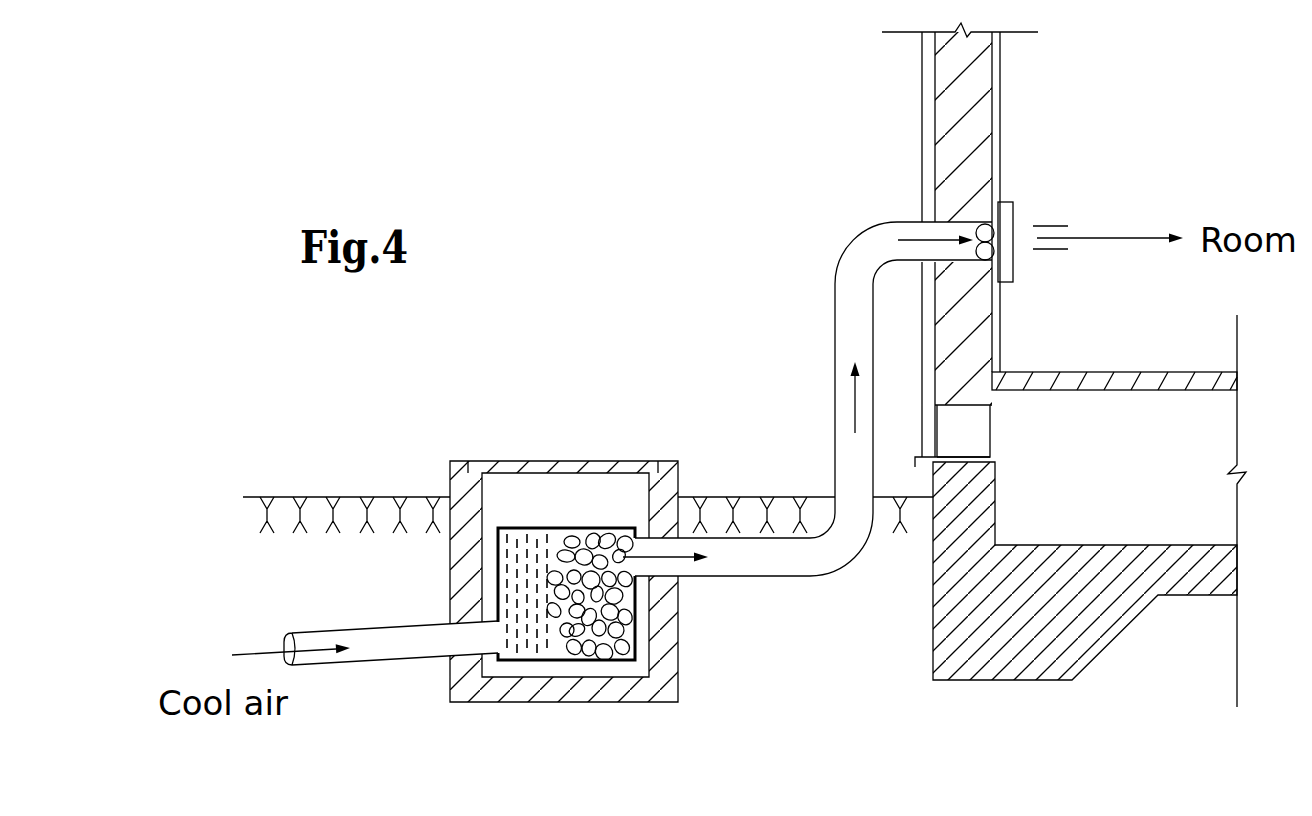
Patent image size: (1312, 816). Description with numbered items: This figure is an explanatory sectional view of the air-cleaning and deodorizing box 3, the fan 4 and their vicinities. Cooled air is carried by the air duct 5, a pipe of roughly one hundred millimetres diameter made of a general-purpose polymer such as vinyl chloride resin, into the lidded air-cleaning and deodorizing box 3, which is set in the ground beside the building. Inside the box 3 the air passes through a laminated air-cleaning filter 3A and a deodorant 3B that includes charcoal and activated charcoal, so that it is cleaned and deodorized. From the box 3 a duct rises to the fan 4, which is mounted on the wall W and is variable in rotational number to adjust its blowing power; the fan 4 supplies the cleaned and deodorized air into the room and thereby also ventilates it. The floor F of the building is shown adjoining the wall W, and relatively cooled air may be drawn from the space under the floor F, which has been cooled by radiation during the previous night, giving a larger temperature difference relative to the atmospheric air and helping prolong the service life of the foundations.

The air-cleaning and deodorizing box 3 is at (682, 478).
The laminated air-cleaning filter 3A is at (520, 653).
The deodorant 3B is at (625, 637).
The fan 4 is at (1005, 222).
The air duct 5 is at (398, 651).
The wall W is at (968, 108).
The floor F is at (1103, 380).